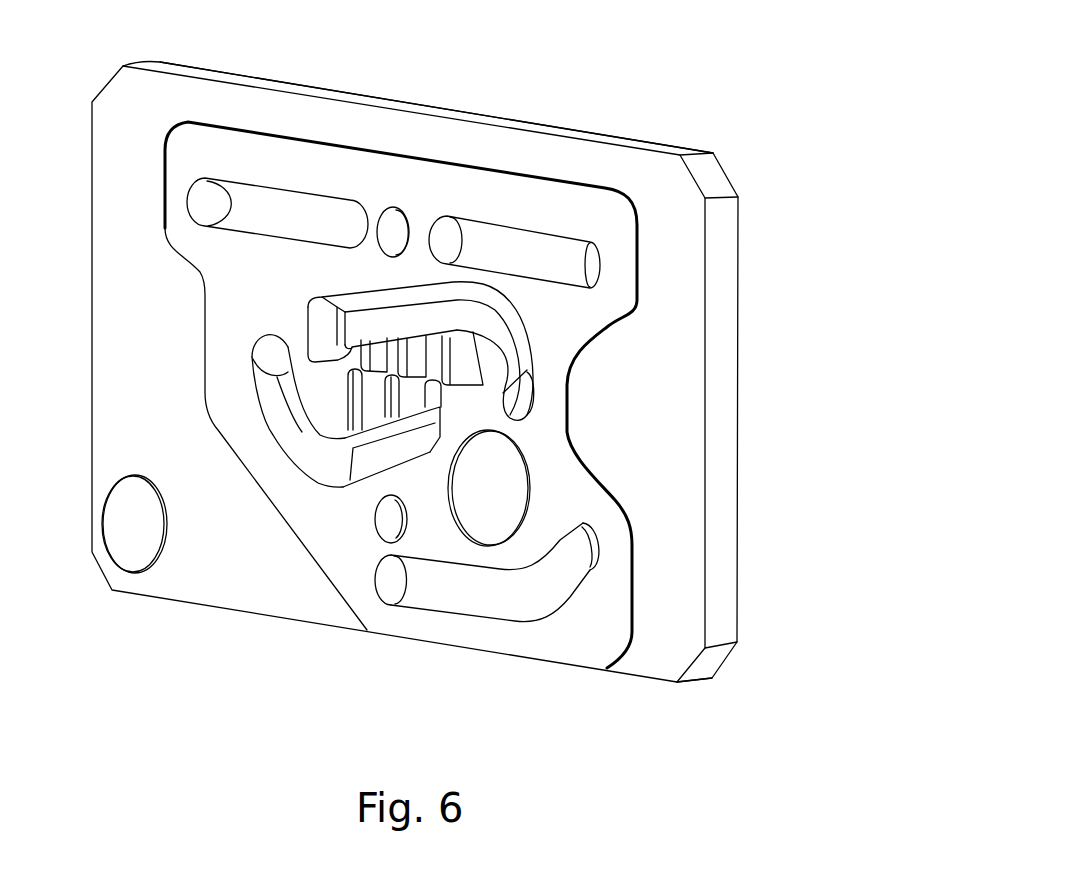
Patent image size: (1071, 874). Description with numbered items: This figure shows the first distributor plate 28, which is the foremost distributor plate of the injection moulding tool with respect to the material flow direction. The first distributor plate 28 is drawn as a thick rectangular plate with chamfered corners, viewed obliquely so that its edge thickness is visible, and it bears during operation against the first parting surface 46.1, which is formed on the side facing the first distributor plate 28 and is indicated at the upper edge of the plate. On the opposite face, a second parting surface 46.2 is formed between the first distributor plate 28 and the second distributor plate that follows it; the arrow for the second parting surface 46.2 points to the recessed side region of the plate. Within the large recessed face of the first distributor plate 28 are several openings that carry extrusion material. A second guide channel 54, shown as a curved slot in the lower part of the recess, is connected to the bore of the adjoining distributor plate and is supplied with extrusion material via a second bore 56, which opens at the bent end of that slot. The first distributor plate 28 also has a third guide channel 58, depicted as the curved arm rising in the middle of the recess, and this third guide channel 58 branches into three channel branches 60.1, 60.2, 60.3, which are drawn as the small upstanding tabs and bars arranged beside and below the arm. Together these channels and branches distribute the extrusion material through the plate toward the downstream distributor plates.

The first distributor plate 28 is at (718, 177).
The first parting surface 46.1 is at (685, 140).
The second parting surface 46.2 is at (657, 343).
The second guide channel 54 is at (463, 590).
The second bore 56 is at (593, 547).
The third guide channel 58 is at (273, 403).
The channel branch 60.1 is at (387, 402).
The channel branch 60.2 is at (437, 423).
The channel branch 60.3 is at (392, 430).